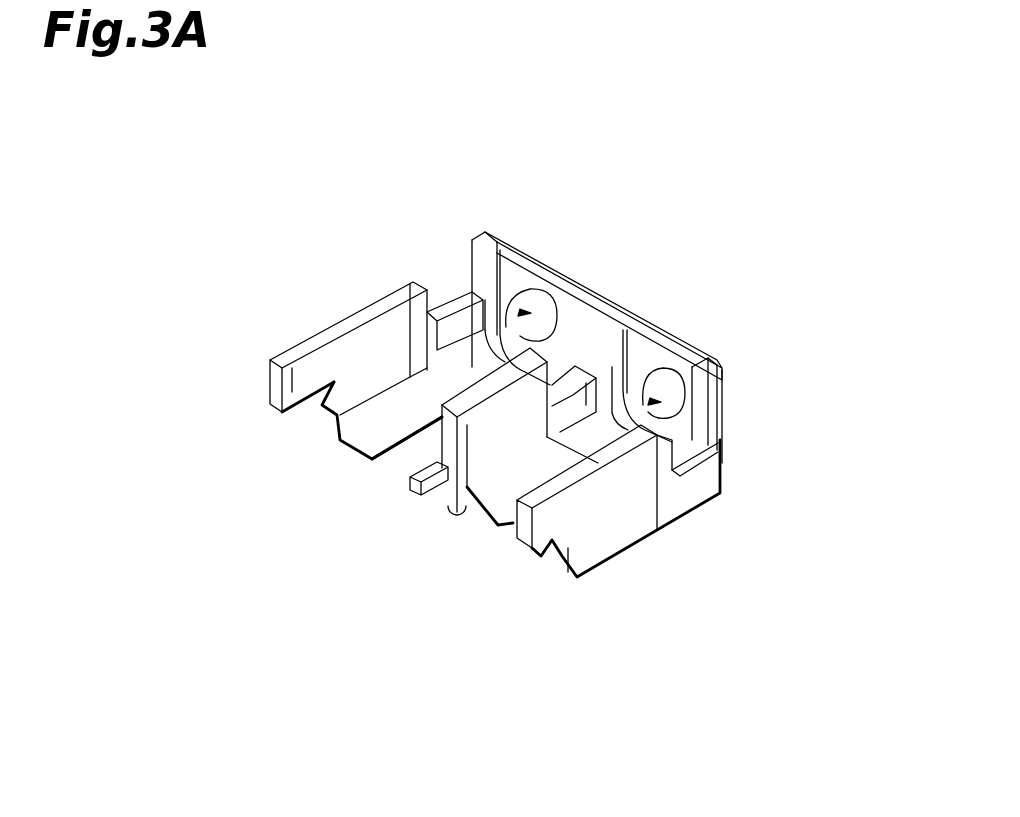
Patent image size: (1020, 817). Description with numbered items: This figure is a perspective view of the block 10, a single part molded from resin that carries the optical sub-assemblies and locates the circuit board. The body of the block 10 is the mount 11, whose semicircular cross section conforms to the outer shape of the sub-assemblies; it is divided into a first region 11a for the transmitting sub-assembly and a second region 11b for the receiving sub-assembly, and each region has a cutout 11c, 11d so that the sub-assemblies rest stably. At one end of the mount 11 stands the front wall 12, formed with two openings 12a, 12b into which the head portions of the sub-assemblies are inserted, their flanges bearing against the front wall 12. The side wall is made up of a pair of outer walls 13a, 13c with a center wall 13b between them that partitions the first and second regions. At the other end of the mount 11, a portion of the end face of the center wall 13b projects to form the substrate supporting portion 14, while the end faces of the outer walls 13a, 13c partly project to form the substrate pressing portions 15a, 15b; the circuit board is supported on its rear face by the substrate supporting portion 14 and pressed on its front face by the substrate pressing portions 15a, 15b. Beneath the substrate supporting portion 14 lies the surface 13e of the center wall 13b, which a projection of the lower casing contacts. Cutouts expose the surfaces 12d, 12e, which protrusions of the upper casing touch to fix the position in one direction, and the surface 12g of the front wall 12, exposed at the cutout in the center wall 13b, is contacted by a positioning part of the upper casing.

The block 10 is at (820, 174).
The mount 11 is at (385, 590).
The first region 11a is at (495, 523).
The second region 11b is at (362, 423).
The cutout 11c is at (504, 533).
The cutout 11d is at (402, 458).
The front wall 12 is at (593, 333).
The opening 12a is at (657, 370).
The opening 12b is at (520, 275).
The surface 12d is at (473, 300).
The surface 12e is at (444, 308).
The surface 12g is at (592, 330).
The outer wall 13a is at (597, 457).
The center wall 13b is at (483, 388).
The outer wall 13c is at (340, 320).
The surface 13e is at (497, 525).
The substrate supporting portion 14 is at (438, 470).
The substrate pressing portion 15a is at (540, 522).
The substrate pressing portion 15b is at (292, 384).